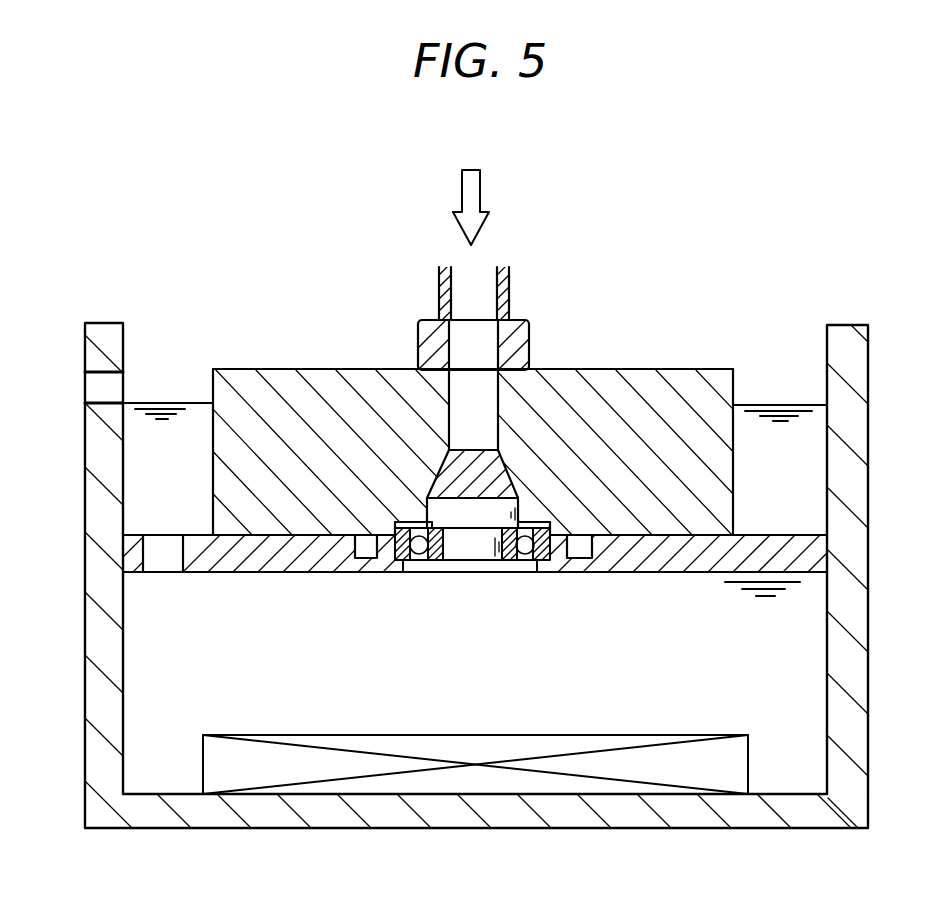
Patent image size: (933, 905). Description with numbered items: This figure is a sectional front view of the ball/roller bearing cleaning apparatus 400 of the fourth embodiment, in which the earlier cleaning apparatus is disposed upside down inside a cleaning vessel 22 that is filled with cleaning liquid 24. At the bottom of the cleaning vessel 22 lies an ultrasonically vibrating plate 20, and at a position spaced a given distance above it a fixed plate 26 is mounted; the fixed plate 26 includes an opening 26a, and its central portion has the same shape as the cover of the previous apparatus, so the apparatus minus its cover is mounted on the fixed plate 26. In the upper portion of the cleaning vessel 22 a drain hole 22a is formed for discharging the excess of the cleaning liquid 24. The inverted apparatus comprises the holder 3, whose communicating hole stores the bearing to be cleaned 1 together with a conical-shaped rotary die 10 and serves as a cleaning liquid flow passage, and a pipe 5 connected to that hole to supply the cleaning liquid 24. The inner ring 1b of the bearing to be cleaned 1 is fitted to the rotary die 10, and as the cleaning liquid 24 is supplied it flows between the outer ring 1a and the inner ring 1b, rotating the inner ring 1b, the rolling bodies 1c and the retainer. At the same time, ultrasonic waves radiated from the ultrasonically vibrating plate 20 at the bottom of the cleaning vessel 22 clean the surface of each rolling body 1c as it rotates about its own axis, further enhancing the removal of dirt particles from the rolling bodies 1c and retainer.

The ball/roller bearing cleaning apparatus 400 is at (749, 207).
The cleaning vessel 22 is at (843, 325).
The drain hole 22a is at (93, 390).
The cleaning liquid 24 is at (483, 186).
The holder 3 is at (690, 369).
The pipe 5 is at (439, 292).
The conical-shaped rotary die 10 is at (508, 470).
The bearing to be cleaned 1 is at (498, 464).
The outer ring 1a is at (555, 566).
The inner ring 1b is at (515, 562).
The rolling bodies 1c is at (528, 555).
The fixed plate 26 is at (818, 557).
The opening 26a is at (165, 565).
The ultrasonically vibrating plate 20 is at (748, 760).